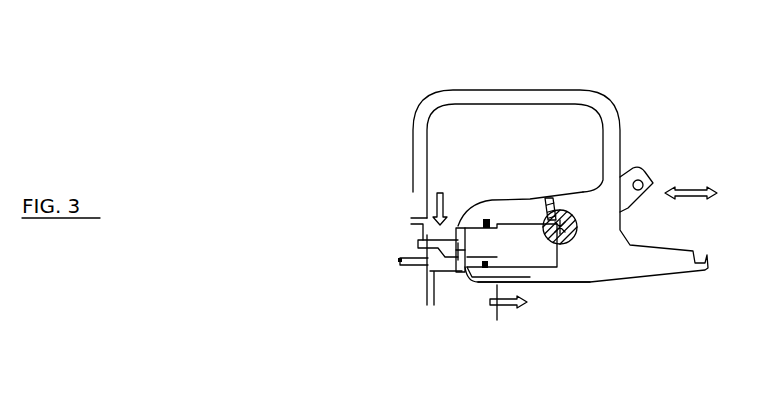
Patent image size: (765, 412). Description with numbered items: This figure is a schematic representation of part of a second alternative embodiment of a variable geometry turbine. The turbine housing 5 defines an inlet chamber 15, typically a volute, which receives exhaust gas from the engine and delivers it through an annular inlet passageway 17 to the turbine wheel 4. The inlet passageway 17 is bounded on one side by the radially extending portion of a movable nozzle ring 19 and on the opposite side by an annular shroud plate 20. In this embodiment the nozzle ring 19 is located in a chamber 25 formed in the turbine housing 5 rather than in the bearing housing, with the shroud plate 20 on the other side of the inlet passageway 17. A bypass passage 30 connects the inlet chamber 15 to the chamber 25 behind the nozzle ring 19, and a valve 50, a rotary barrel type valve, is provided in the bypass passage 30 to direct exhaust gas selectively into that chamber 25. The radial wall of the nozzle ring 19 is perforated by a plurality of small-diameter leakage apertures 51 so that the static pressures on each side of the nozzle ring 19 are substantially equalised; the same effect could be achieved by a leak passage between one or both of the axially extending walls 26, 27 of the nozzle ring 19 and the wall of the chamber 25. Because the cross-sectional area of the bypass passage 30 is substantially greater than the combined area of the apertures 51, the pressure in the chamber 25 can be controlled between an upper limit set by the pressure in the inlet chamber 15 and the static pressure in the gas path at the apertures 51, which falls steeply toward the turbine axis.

The turbine housing 5 is at (472, 93).
The inlet chamber 15 is at (448, 125).
The annular inlet passageway 17 is at (427, 222).
The nozzle ring 19 is at (462, 228).
The shroud plate 20 is at (398, 260).
The chamber 25 is at (530, 260).
The axially extending wall 26 is at (495, 224).
The axially extending wall 27 is at (497, 263).
The bypass passage 30 is at (557, 193).
The valve 50 is at (572, 242).
The leakage apertures 51 is at (460, 243).
The turbine wheel 4 is at (460, 307).